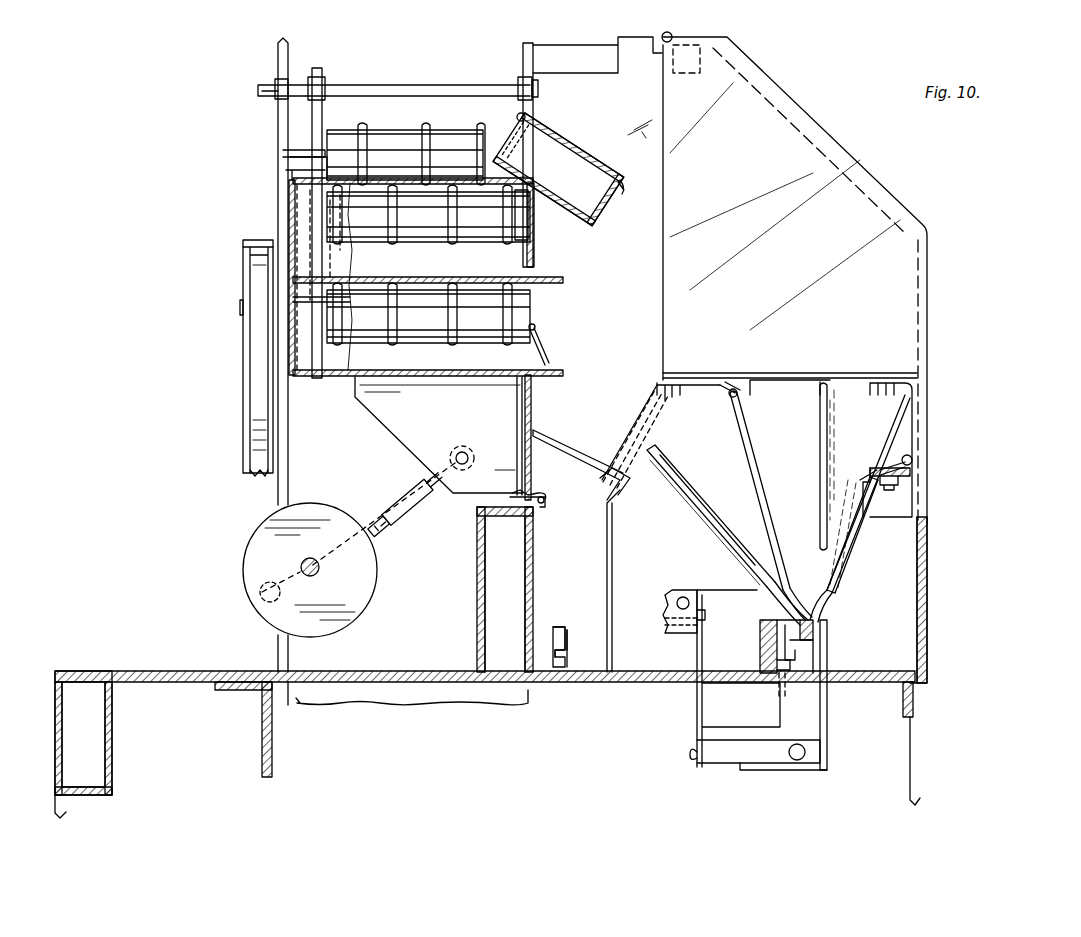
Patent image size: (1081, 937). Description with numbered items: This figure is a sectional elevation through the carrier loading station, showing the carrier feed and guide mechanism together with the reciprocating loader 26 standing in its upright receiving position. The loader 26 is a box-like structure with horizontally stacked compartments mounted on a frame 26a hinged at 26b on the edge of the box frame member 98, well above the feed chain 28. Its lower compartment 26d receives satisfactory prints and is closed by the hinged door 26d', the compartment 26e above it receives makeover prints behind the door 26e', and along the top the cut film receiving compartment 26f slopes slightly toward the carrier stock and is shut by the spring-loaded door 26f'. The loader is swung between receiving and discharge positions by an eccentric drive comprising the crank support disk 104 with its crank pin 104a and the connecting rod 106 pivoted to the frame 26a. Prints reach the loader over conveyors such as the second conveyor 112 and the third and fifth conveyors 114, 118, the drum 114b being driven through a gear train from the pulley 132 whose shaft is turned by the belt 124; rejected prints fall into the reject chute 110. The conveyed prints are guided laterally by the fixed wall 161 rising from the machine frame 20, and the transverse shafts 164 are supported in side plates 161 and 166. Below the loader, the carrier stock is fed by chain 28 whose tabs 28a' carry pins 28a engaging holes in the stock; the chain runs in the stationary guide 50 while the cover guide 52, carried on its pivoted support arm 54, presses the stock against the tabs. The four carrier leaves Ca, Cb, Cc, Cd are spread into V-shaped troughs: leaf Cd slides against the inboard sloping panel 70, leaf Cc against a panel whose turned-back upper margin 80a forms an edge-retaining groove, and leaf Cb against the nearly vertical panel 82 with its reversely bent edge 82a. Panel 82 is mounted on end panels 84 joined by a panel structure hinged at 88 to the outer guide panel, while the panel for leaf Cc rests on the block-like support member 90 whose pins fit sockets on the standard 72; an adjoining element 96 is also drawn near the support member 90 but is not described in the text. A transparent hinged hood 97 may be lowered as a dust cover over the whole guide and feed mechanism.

The machine frame 20 is at (156, 667).
The loader 26 is at (284, 215).
The loader support frame 26a is at (443, 437).
The hinge 26b is at (546, 503).
The lower compartment 26d is at (428, 326).
The hinged door 26d' is at (557, 339).
The compartment 26e is at (413, 223).
The hinged door 26e' is at (556, 225).
The cut film receiving compartment 26f is at (572, 161).
The hinged spring-loaded door 26f' is at (629, 199).
The chain 28 is at (572, 654).
The chain pins 28a is at (559, 619).
The pin support tabs 28a' is at (585, 629).
The stationary guide 50 is at (762, 667).
The cover guide 52 is at (810, 617).
The pivoted support arm 54 is at (820, 712).
The inboard sloping side panel 70 is at (690, 527).
The standard 72 is at (607, 553).
The upper marginal portion 80a is at (742, 405).
The panel 82 is at (828, 400).
The reversely bent upper edge portion 82a is at (820, 400).
The end panels 84 is at (877, 400).
The hinge 88 is at (913, 462).
The block-like support member 90 is at (655, 388).
The duct 96 is at (630, 445).
The hinged hood 97 is at (895, 188).
The box frame member 98 is at (477, 580).
The crank support disk 104 is at (352, 610).
The crank pin 104a is at (255, 580).
The connecting rod 106 is at (390, 512).
The reject chute 110 is at (398, 705).
The second rubber multibelt conveyor 112 is at (480, 128).
The third conveyor 114 is at (385, 230).
The drum 114b is at (500, 232).
The fifth conveyor 118 is at (445, 340).
The belt 124 is at (250, 410).
The pulley 132 is at (243, 363).
The fixed wall 161 is at (520, 46).
The shafts 164 is at (408, 90).
The side plate 166 is at (278, 38).
The carrier leaf Ca is at (838, 490).
The carrier leaf Cb is at (818, 505).
The carrier leaf Cc is at (760, 480).
The carrier leaf Cd is at (680, 485).